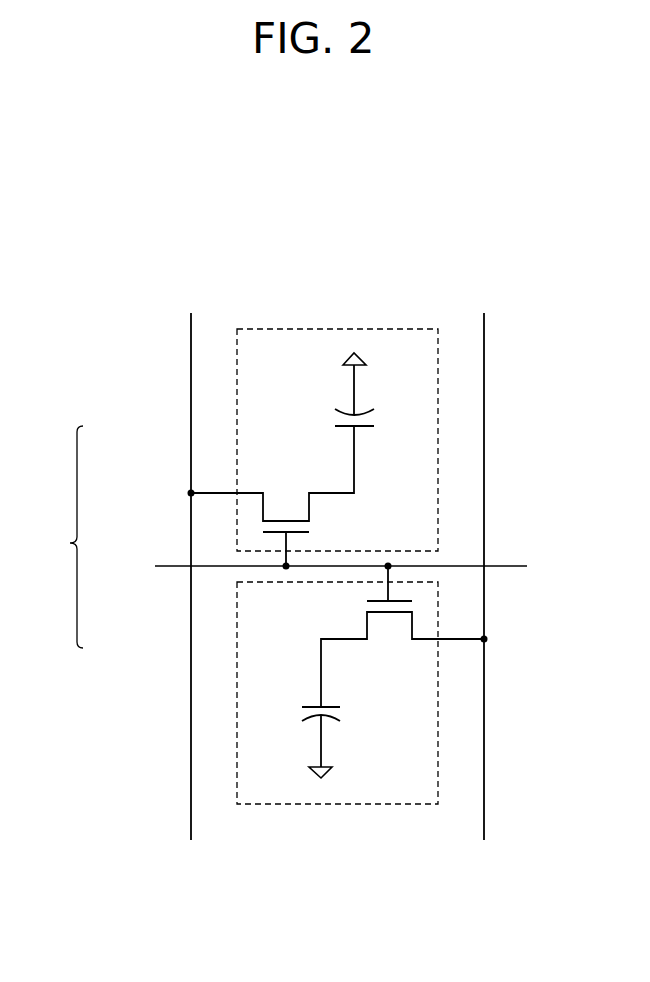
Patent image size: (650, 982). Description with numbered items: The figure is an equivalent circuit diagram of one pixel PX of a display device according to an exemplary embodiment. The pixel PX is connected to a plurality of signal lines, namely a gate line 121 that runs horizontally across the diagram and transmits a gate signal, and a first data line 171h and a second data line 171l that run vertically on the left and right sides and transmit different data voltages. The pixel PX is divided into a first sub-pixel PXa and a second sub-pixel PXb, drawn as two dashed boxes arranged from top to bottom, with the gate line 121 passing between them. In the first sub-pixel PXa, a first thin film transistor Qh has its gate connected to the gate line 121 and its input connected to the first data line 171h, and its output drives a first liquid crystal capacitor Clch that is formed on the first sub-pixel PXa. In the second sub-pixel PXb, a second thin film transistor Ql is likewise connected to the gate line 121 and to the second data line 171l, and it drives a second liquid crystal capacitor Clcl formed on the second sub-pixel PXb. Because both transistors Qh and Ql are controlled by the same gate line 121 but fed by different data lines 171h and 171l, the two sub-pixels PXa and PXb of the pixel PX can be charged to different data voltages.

The first data line 171h is at (190, 561).
The second data line 171l is at (483, 561).
The gate line 121 is at (358, 566).
The pixel PX is at (61, 537).
The first sub-pixel PXa is at (236, 440).
The second sub-pixel PXb is at (236, 639).
The first thin film transistor Qh is at (271, 496).
The second thin film transistor Ql is at (404, 636).
The first liquid crystal capacitor Clch is at (332, 393).
The second liquid crystal capacitor Clcl is at (338, 739).